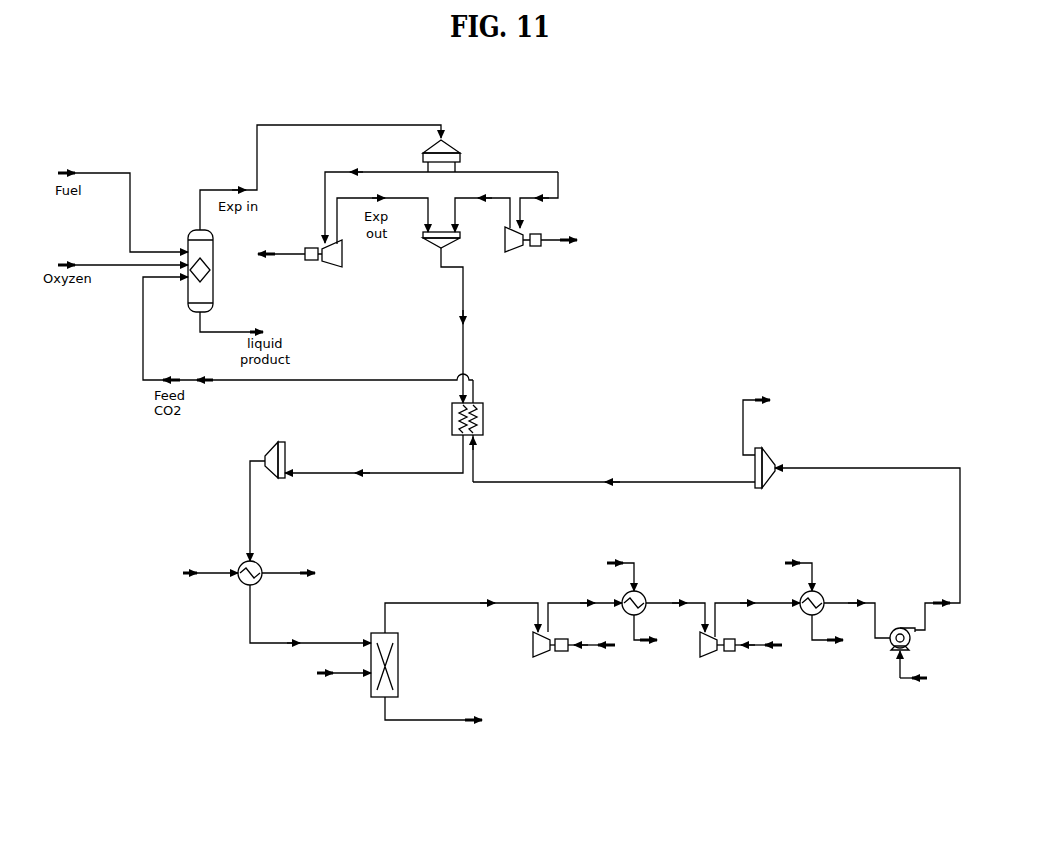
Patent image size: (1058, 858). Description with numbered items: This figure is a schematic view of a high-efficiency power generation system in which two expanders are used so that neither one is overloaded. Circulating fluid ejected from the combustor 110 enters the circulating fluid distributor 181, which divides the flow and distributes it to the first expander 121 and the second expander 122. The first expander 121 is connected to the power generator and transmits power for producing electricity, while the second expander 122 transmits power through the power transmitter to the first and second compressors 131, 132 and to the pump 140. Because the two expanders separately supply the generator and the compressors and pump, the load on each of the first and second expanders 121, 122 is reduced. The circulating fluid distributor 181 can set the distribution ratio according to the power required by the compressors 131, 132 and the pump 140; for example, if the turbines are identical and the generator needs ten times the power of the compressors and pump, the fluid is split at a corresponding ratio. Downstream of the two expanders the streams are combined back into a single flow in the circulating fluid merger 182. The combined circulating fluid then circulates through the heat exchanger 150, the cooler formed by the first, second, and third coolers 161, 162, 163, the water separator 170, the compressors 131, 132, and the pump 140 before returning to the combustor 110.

The combustor 110 is at (214, 288).
The first expander 121 is at (344, 256).
The second expander 122 is at (535, 250).
The first compressor 131 is at (540, 658).
The second compressor 132 is at (706, 658).
The pump 140 is at (890, 645).
The heat exchanger 150 is at (485, 420).
The first cooler 161 is at (260, 563).
The second cooler 162 is at (643, 592).
The third cooler 163 is at (820, 592).
The water separator 170 is at (378, 698).
The circulating fluid distributor 181 is at (462, 150).
The circulating fluid merger 182 is at (456, 243).